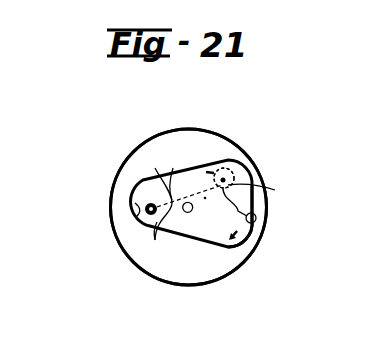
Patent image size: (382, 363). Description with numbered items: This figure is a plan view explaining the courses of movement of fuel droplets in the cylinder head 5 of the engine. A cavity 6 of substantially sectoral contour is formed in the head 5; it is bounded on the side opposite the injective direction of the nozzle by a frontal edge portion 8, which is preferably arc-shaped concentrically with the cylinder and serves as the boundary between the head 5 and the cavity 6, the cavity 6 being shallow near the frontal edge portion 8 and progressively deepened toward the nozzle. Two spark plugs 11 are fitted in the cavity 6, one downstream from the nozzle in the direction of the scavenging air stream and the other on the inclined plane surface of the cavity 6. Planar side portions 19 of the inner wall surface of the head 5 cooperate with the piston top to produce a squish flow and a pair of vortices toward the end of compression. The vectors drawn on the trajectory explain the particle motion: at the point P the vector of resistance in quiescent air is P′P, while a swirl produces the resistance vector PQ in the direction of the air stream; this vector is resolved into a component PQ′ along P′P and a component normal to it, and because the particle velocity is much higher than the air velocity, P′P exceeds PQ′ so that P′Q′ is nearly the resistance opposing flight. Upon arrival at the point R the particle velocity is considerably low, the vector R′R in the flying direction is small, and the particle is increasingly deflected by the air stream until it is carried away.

The cylinder head 5 is at (112, 197).
The cavity 6 is at (244, 243).
The frontal edge portion 8 is at (256, 219).
The spark plug 11 is at (136, 225).
The planar side portion 19 is at (167, 145).
The point P is at (173, 168).
The point P′ is at (206, 192).
The point Q is at (158, 194).
The point Q′ is at (157, 242).
The point R is at (275, 190).
The point R′ is at (228, 182).